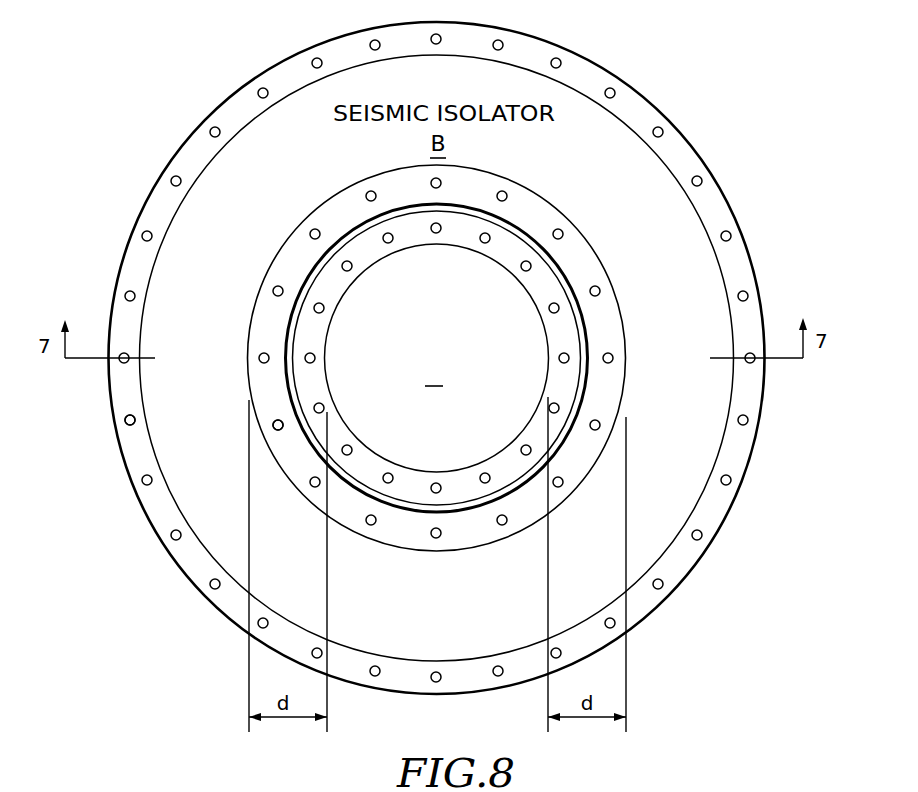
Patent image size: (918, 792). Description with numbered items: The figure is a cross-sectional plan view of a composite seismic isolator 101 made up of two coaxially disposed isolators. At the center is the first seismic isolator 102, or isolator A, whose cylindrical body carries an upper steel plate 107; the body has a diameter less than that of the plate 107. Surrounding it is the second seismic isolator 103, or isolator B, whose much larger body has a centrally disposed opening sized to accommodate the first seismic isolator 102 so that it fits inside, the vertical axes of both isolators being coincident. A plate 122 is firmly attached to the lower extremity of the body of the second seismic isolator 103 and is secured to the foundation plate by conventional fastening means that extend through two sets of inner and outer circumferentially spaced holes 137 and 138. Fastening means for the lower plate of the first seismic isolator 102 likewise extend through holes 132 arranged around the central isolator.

The composite seismic isolator 101 is at (132, 153).
The first seismic isolator 102 is at (522, 380).
The second seismic isolator 103 is at (570, 201).
The upper steel plate 107 is at (405, 490).
The plate 122 is at (718, 497).
The holes 132 is at (532, 268).
The inner circumferentially spaced holes 137 is at (277, 420).
The outer circumferentially spaced holes 138 is at (128, 417).